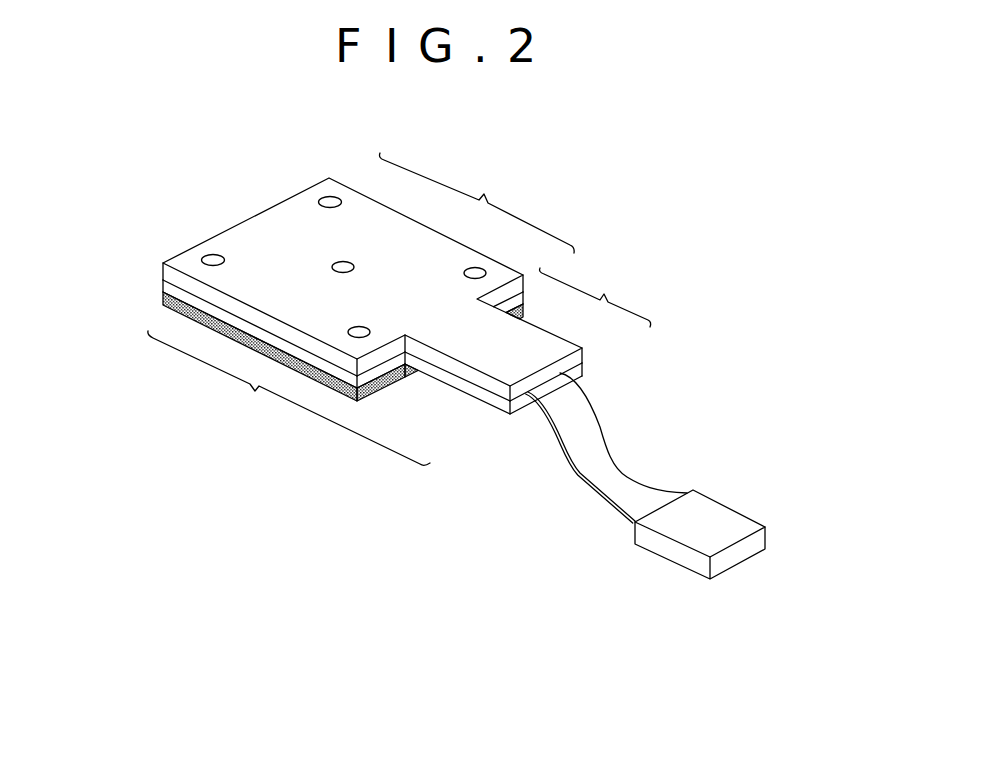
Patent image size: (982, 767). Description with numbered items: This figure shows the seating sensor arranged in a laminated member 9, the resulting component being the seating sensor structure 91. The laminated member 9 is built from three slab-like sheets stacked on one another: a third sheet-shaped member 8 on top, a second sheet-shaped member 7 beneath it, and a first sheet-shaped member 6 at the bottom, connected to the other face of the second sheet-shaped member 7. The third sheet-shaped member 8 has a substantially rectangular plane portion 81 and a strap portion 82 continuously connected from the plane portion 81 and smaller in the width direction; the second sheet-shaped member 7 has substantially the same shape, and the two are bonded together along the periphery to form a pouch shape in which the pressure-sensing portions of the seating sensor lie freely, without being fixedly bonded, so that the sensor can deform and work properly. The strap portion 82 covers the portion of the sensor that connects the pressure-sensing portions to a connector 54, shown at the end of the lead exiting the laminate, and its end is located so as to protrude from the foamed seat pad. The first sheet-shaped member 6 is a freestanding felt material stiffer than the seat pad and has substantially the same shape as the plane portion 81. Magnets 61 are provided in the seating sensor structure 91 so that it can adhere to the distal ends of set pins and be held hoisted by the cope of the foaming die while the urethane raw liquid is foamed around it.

The first sheet-shaped member 6 is at (170, 307).
The second sheet-shaped member 7 is at (172, 288).
The third sheet-shaped member 8 is at (170, 273).
The laminated member 9 is at (289, 398).
The connector 54 is at (710, 522).
The magnets 61 is at (212, 254).
The plane portion 81 is at (477, 203).
The strap portion 82 is at (595, 295).
The seating sensor structure 91 is at (424, 356).